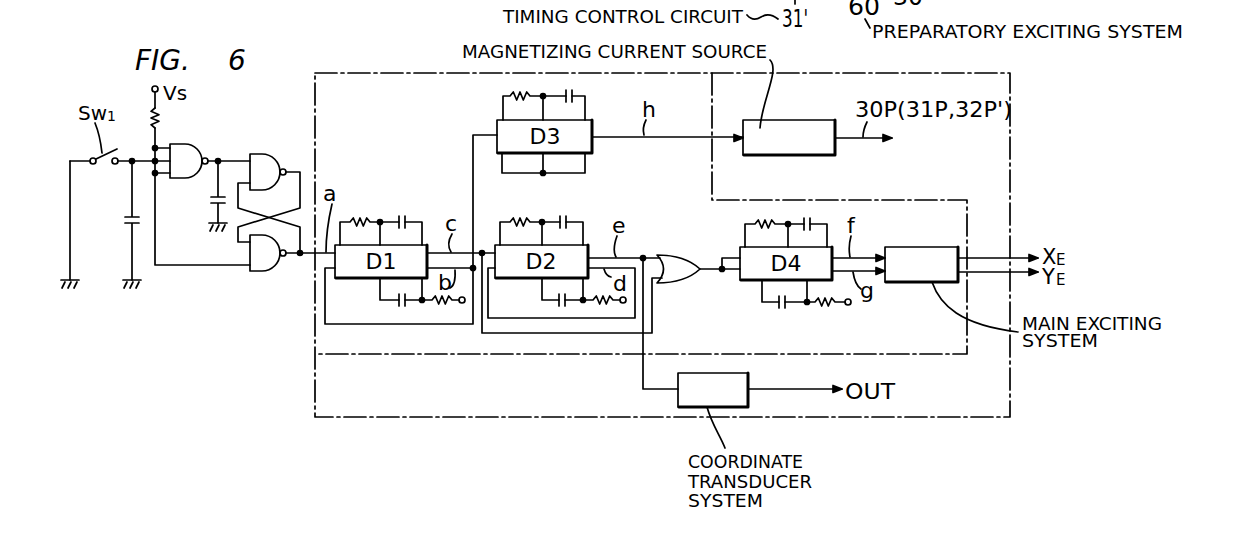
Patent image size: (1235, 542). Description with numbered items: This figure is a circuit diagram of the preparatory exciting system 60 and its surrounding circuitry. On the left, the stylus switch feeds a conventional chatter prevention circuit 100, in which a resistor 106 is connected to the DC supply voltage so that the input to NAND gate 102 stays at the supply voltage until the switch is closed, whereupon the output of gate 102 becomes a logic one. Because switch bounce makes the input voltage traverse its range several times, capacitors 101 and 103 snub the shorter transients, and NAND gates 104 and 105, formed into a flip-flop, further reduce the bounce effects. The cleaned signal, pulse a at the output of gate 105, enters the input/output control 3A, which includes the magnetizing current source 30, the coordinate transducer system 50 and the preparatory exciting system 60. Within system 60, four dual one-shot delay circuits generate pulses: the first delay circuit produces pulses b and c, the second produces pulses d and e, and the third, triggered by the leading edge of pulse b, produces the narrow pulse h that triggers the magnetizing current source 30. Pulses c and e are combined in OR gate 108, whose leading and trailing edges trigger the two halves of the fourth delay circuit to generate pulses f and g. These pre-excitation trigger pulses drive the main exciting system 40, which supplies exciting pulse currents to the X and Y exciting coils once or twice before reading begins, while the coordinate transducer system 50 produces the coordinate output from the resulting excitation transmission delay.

The input/output control 3A is at (932, 73).
The preparatory exciting system 60 is at (922, 200).
The magnetizing current source 30 is at (817, 137).
The main exciting system 40 is at (961, 264).
The coordinate transducer system 50 is at (760, 390).
The chatter prevention circuit 100 is at (200, 281).
The capacitor 101 is at (112, 224).
The NAND gate 102 is at (194, 146).
The capacitor 103 is at (196, 196).
The NAND gate 104 is at (275, 145).
The NAND gate 105 is at (268, 272).
The resistor 106 is at (176, 120).
The OR gate 108 is at (675, 253).